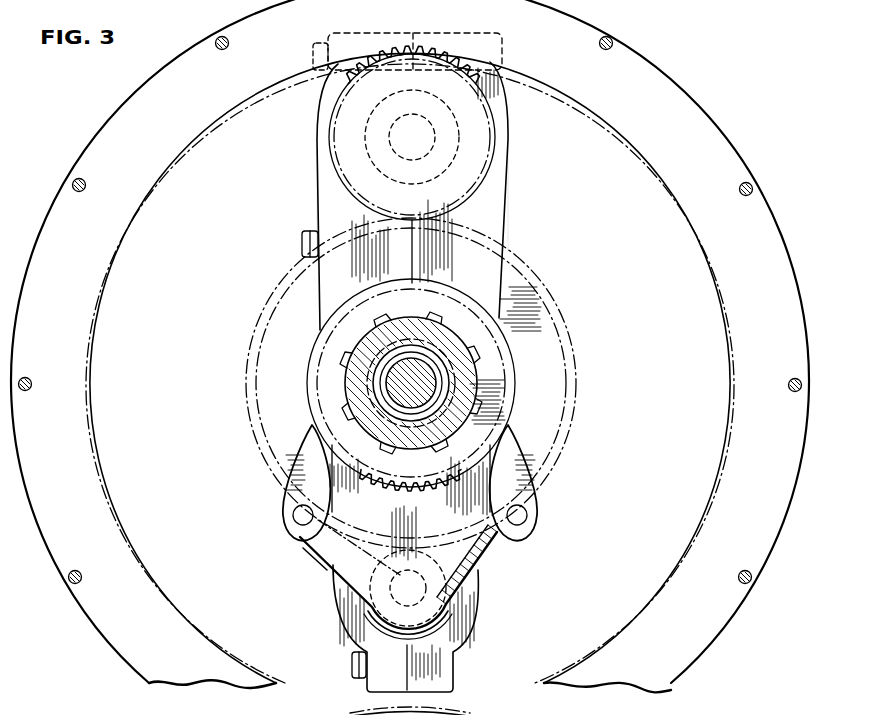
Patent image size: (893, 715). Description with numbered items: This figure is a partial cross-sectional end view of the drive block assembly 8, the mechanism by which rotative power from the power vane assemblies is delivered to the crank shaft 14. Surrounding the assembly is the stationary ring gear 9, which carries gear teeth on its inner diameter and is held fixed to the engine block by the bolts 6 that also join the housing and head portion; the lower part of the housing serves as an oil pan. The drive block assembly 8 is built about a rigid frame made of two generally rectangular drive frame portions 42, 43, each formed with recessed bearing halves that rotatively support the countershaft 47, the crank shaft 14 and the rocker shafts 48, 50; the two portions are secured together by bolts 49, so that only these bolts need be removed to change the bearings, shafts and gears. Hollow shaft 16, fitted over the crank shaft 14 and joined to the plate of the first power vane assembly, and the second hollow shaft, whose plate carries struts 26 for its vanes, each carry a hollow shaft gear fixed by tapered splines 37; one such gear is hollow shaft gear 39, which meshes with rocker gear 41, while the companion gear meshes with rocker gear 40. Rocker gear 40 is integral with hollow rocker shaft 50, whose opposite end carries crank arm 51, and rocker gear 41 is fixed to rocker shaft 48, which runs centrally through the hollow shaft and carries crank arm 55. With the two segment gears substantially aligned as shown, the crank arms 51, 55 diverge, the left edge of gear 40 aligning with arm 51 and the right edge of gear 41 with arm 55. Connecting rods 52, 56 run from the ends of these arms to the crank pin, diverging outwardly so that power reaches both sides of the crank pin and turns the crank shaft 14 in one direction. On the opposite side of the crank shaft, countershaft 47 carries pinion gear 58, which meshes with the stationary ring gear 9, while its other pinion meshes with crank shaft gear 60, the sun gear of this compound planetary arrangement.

The bolts 6 is at (75, 181).
The drive block assembly 8 is at (518, 222).
The ring gear 9 is at (469, 19).
The crank shaft 14 is at (428, 372).
The hollow shaft 16 is at (390, 357).
The struts 26 is at (374, 425).
The tapered splines 37 is at (341, 386).
The hollow shaft gear 39 is at (393, 473).
The rocker gear 40 is at (490, 573).
The rocker gear 41 is at (330, 567).
The drive frame portion 42 is at (507, 180).
The drive frame portion 43 is at (318, 181).
The countershaft 47 is at (424, 143).
The rocker shaft 48 is at (412, 582).
The bolts 49 is at (313, 62).
The hollow rocker shaft 50 is at (440, 616).
The crank arm 51 is at (312, 542).
The connecting rod 52 is at (303, 446).
The crank arm 55 is at (516, 549).
The connecting rod 56 is at (533, 478).
The pinion gear 58 is at (420, 88).
The crank shaft gear 60 is at (555, 322).